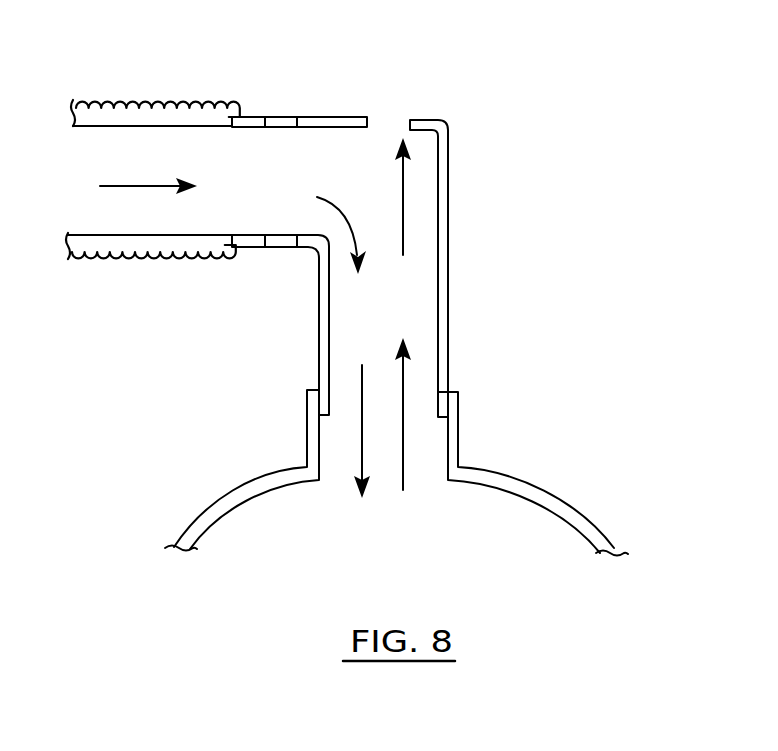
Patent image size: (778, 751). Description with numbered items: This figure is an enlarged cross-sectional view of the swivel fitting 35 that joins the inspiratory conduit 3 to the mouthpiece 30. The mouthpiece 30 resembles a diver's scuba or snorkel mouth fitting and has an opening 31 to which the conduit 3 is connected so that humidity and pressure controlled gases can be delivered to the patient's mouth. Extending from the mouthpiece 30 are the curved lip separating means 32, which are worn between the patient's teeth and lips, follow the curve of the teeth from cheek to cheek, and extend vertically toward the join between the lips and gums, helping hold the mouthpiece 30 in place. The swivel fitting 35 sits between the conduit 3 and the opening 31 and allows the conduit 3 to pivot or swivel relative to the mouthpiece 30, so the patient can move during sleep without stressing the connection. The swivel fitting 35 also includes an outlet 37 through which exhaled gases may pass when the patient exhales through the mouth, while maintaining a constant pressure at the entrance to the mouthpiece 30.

The inspiratory conduit 3 is at (168, 107).
The outlet 37 is at (384, 115).
The swivel fitting 35 is at (450, 237).
The mouthpiece 30 is at (197, 500).
The opening 31 is at (460, 422).
The lip separating means 32 is at (598, 517).